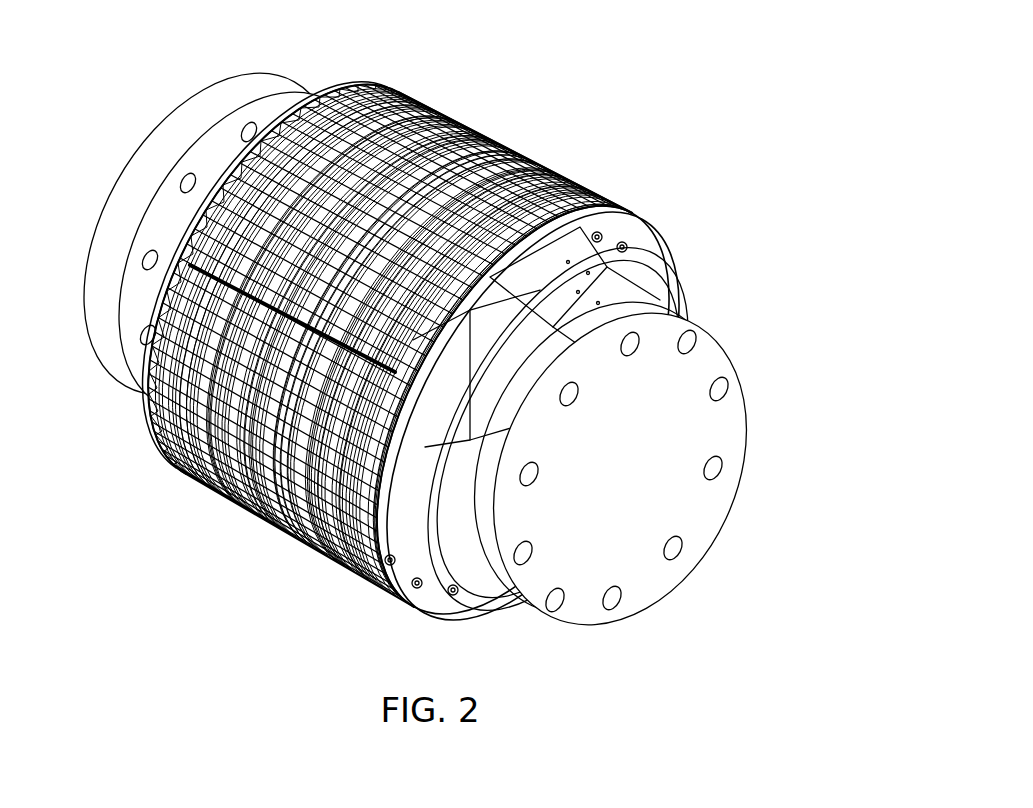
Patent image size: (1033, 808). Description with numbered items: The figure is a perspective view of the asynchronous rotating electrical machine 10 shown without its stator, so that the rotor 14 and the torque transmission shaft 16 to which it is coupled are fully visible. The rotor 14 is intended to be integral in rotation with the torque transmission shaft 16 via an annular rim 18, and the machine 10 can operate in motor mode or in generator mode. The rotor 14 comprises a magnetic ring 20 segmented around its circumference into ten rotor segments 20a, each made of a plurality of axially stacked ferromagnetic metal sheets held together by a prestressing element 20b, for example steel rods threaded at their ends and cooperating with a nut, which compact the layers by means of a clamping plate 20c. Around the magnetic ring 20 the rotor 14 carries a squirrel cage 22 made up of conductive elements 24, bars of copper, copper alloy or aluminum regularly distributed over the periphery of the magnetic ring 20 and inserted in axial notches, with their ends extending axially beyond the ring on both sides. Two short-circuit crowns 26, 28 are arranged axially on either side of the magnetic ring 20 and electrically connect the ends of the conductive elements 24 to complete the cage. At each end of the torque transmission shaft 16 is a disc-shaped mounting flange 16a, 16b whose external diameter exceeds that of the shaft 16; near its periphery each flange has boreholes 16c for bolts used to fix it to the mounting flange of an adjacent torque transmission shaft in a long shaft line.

The asynchronous rotating electrical machine 10 is at (419, 343).
The rotor 14 is at (332, 314).
The torque transmission shaft 16 is at (460, 440).
The mounting flange 16a is at (150, 172).
The mounting flange 16b is at (742, 410).
The boreholes 16c is at (243, 125).
The annular rim 18 is at (403, 567).
The magnetic ring 20 is at (545, 160).
The rotor segments 20a is at (298, 94).
The prestressing element 20b is at (597, 228).
The clamping plate 20c is at (662, 285).
The squirrel cage 22 is at (398, 85).
The conductive elements 24 is at (163, 460).
The short-circuit crown 26 is at (342, 88).
The short-circuit crown 28 is at (648, 238).